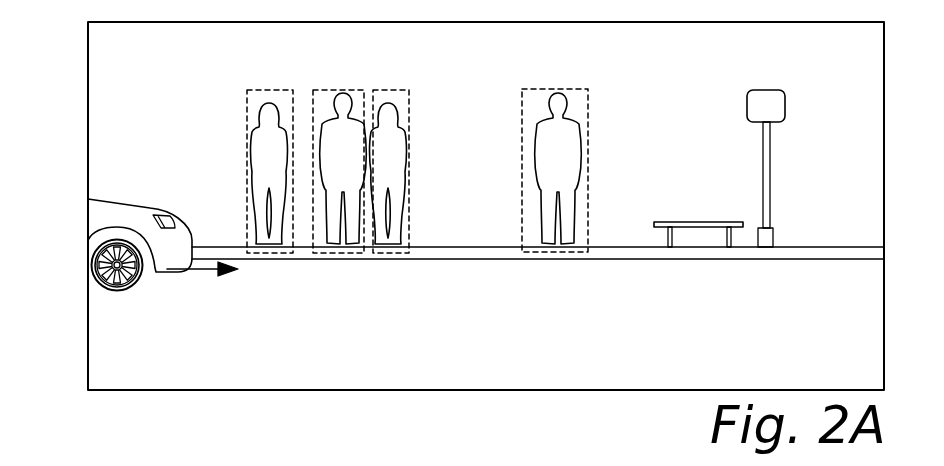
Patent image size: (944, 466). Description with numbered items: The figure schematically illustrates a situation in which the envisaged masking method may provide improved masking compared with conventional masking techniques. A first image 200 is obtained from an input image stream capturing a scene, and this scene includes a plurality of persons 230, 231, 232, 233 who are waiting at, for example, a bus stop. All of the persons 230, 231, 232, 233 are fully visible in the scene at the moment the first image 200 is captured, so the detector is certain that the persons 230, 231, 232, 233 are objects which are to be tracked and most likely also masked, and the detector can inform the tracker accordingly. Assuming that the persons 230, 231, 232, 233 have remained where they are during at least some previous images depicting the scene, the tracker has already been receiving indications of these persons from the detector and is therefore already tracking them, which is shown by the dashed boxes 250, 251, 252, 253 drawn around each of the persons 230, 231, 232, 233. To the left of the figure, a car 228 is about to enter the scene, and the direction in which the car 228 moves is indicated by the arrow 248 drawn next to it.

The first image 200 is at (162, 390).
The car 228 is at (117, 213).
The person 230 is at (572, 155).
The person 231 is at (392, 151).
The person 232 is at (351, 104).
The person 233 is at (267, 152).
The arrow 248 is at (197, 273).
The dashed box 250 is at (588, 107).
The dashed box 251 is at (409, 105).
The dashed box 252 is at (313, 98).
The dashed box 253 is at (248, 115).